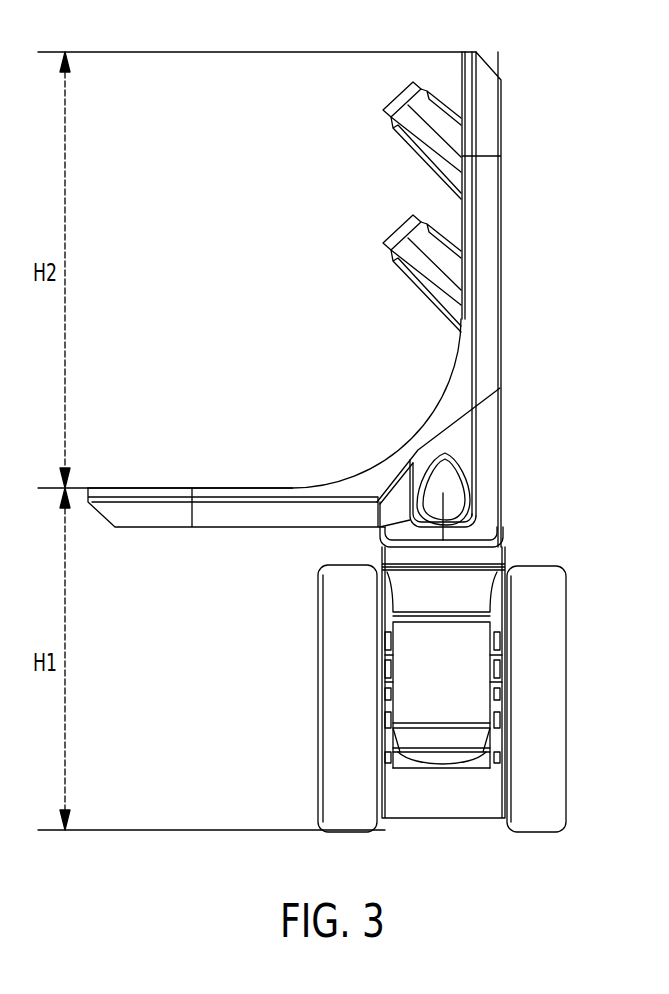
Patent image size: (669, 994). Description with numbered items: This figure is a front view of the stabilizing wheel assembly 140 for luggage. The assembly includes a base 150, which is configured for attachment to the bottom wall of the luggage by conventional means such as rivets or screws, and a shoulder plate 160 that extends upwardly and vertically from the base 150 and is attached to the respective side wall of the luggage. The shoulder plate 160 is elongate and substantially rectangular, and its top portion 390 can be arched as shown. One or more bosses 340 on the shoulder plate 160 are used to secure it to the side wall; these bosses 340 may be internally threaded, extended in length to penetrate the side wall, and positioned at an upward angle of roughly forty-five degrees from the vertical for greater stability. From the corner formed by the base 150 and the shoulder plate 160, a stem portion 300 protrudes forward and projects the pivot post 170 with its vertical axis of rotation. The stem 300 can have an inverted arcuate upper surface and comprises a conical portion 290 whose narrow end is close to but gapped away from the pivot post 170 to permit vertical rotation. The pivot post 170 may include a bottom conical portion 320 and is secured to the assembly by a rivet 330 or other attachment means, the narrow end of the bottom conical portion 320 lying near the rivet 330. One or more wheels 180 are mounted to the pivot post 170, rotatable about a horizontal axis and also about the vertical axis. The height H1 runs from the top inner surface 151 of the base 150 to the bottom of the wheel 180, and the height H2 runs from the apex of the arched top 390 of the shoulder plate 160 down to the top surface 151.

The wheel assembly 140 is at (568, 247).
The base 150 is at (223, 527).
The top surface of base 151 is at (117, 488).
The shoulder plate 160 is at (502, 360).
The pivot post 170 is at (468, 675).
The wheels 180 is at (338, 697).
The conical portion 290 is at (468, 585).
The stem portion 300 is at (478, 518).
The bottom conical portion 320 is at (470, 732).
The rivet 330 is at (443, 760).
The bosses 340 is at (373, 208).
The arched top portion 390 is at (507, 62).